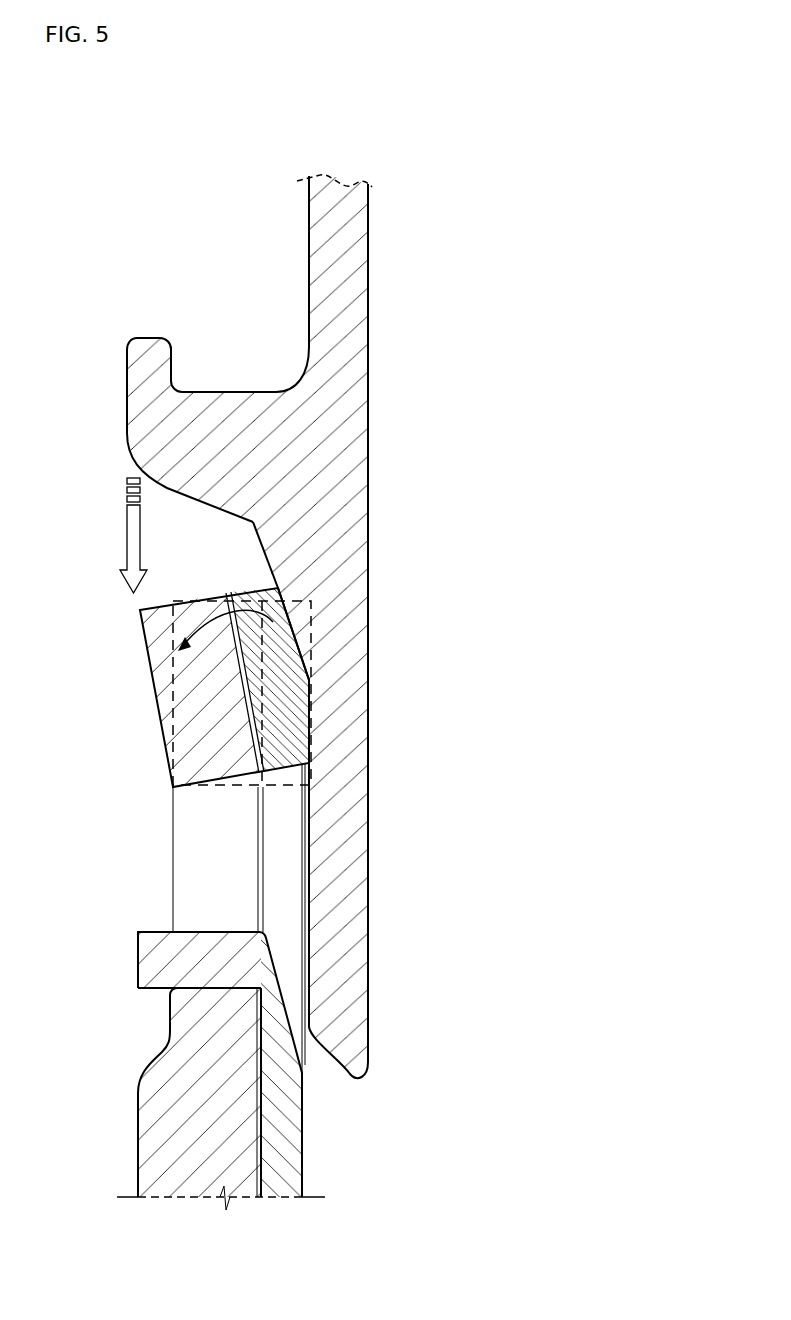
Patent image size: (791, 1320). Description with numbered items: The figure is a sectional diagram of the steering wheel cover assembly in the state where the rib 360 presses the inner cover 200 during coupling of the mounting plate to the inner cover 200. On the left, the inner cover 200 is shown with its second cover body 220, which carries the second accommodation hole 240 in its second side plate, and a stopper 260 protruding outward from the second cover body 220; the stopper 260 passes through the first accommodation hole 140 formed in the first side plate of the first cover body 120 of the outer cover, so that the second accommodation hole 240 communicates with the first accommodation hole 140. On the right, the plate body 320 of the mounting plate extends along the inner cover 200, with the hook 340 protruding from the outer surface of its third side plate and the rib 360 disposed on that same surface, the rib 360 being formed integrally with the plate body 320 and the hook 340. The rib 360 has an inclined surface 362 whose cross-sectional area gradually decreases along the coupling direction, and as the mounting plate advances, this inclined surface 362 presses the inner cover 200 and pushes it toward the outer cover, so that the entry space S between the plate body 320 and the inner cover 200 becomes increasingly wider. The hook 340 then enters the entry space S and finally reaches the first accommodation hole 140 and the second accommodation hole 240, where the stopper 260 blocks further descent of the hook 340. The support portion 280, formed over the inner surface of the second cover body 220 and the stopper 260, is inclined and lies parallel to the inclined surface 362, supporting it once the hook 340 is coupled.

The first cover body 120 is at (157, 676).
The first accommodation hole 140 is at (212, 822).
The inner cover 200 is at (210, 1089).
The second cover body 220 is at (248, 594).
The second accommodation hole 240 is at (275, 876).
The stopper 260 is at (152, 962).
The support portion 280 is at (287, 993).
The plate body 320 is at (361, 818).
The hook 340 is at (243, 410).
The rib 360 is at (256, 585).
The inclined surface 362 is at (281, 613).
The entry space S is at (302, 677).